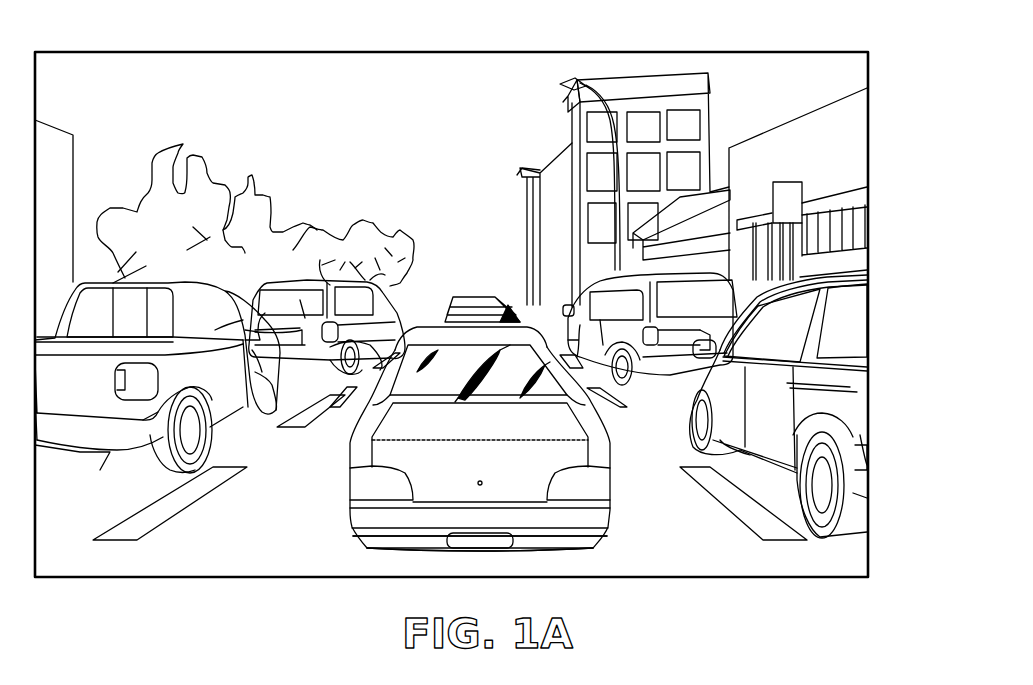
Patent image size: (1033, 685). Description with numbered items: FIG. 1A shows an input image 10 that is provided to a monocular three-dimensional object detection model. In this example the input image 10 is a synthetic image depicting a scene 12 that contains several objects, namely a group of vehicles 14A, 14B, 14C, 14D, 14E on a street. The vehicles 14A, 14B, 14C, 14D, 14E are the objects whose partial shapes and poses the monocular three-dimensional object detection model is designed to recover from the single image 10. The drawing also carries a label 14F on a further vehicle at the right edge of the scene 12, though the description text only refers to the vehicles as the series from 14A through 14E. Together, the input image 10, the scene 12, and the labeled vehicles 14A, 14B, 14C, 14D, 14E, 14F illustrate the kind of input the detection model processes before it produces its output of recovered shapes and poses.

The input image 10 is at (893, 108).
The scene 12 is at (392, 110).
The vehicle 14A is at (300, 280).
The vehicle 14B is at (110, 452).
The vehicle 14C is at (480, 297).
The vehicle 14D is at (375, 516).
The vehicle 14E is at (684, 378).
The right vehicle 14F is at (857, 445).